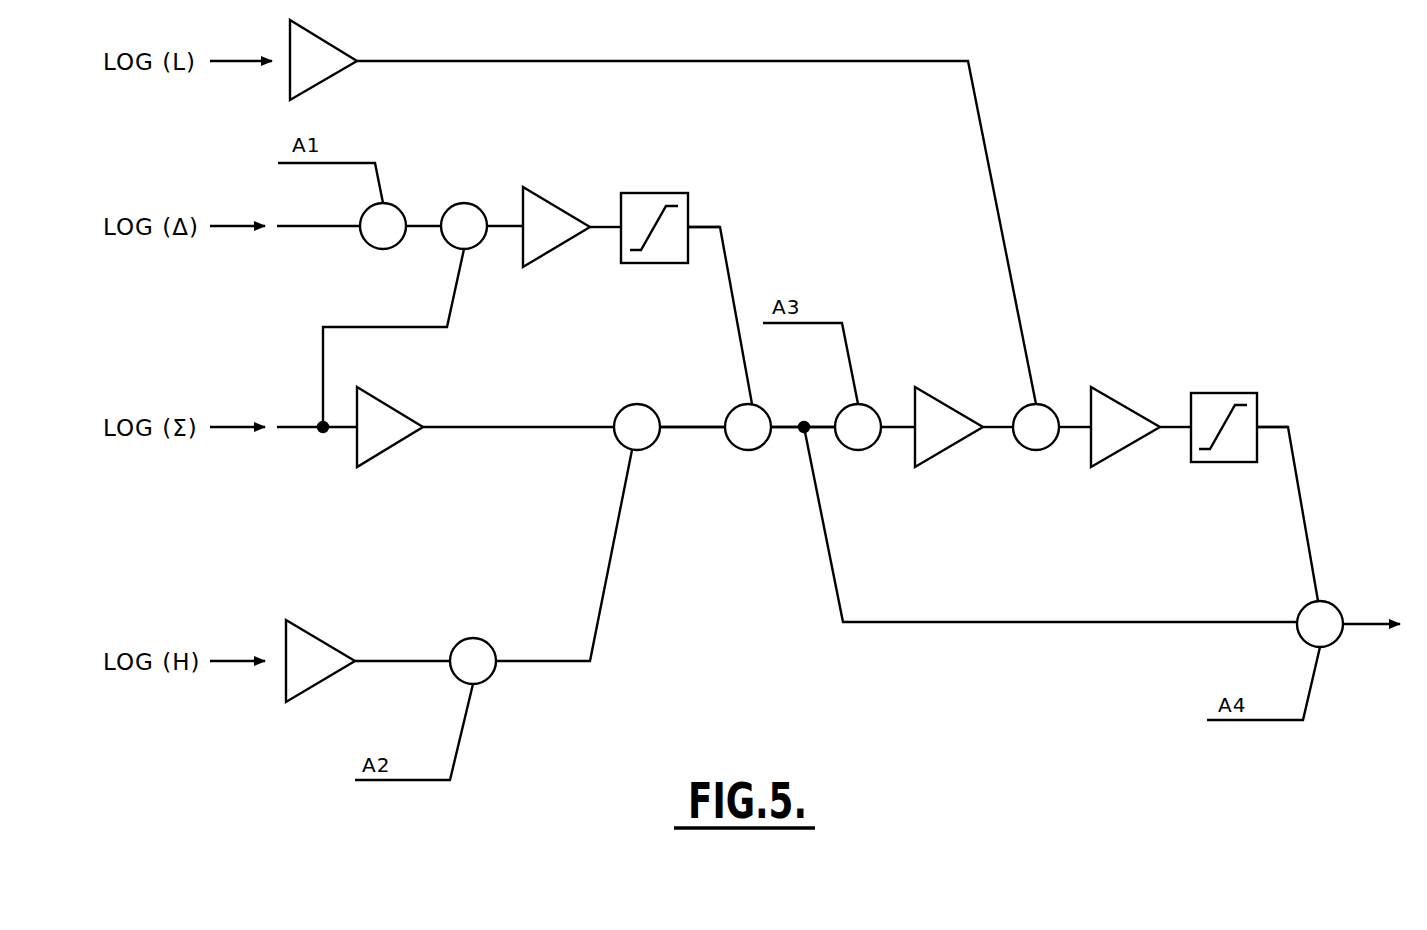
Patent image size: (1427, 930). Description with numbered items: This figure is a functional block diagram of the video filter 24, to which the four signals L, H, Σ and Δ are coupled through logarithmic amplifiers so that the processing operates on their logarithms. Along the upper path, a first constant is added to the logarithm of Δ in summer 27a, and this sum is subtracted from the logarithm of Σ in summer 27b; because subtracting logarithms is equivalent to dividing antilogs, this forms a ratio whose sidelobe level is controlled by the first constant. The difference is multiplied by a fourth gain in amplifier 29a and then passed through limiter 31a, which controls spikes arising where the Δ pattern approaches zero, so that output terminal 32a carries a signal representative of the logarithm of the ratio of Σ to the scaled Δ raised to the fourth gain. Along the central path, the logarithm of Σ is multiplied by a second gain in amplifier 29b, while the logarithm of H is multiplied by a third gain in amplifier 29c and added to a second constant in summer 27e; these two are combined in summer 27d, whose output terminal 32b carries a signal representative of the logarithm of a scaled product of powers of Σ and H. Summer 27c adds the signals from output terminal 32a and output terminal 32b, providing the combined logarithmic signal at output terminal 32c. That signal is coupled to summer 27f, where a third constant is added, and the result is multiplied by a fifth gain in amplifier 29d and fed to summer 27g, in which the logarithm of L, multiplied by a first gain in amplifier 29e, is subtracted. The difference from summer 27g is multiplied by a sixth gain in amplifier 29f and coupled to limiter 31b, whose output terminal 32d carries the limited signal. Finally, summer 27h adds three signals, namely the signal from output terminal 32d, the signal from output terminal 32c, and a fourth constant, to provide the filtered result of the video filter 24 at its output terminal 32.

The video filter 24 is at (1090, 148).
The summer 27a is at (370, 244).
The summer 27b is at (466, 203).
The summer 27c is at (750, 450).
The summer 27d is at (641, 404).
The summer 27e is at (488, 640).
The summer 27f is at (860, 450).
The summer 27g is at (1030, 450).
The summer 27h is at (1336, 641).
The amplifier 29a is at (553, 248).
The amplifier 29b is at (395, 400).
The amplifier 29c is at (318, 640).
The amplifier 29d is at (950, 400).
The amplifier 29e is at (327, 42).
The amplifier 29f is at (1122, 402).
The limiter 31a is at (652, 193).
The limiter 31b is at (1225, 462).
The output terminal 32 is at (1360, 620).
The output terminal 32a is at (730, 256).
The output terminal 32b is at (688, 430).
The output terminal 32c is at (782, 410).
The output terminal 32d is at (1300, 452).